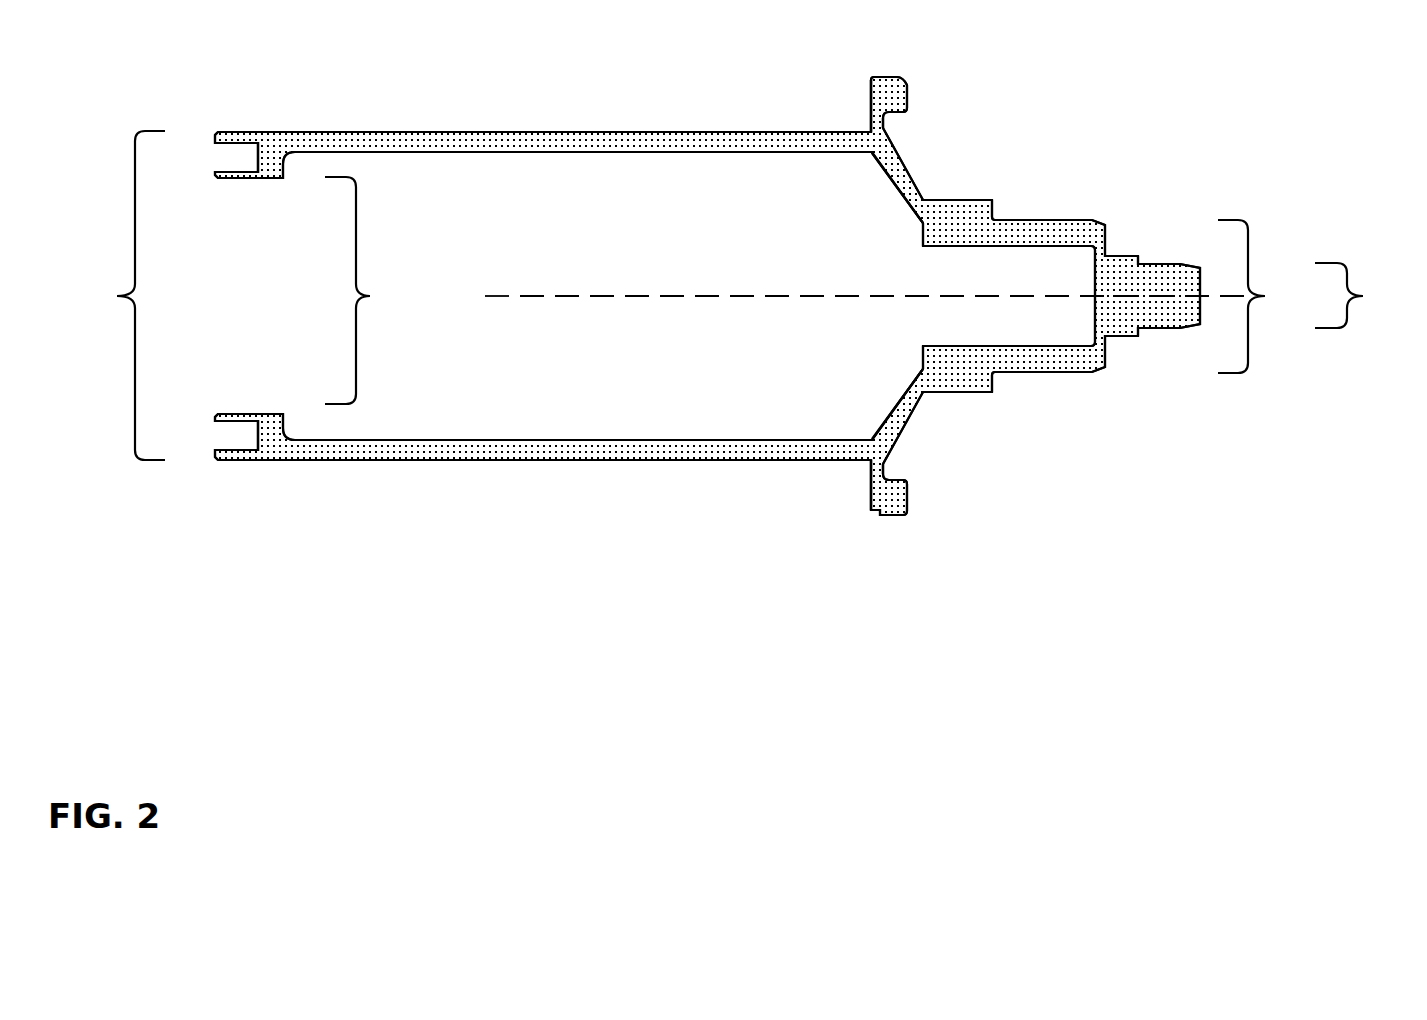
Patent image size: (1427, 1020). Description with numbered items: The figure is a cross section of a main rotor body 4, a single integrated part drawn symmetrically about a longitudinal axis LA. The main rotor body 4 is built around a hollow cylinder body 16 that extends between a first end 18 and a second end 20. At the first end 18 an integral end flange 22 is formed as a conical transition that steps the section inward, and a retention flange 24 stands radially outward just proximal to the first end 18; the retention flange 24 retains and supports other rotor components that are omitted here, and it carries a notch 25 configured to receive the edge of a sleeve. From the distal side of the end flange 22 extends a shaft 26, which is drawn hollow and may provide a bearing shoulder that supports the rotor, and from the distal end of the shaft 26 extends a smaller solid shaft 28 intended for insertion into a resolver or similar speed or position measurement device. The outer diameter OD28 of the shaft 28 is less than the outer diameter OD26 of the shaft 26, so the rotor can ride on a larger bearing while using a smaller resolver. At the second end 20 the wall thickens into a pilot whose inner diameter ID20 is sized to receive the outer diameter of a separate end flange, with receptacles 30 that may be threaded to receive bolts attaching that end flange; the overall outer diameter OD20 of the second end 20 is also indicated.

The main rotor body 4 is at (1102, 134).
The hollow cylinder body 16 is at (474, 96).
The first end 18 is at (835, 106).
The second end 20 is at (205, 108).
The integral end flange 22 is at (939, 147).
The retention flange 24 is at (898, 83).
The notch 25 is at (877, 80).
The shaft 26 is at (1001, 299).
The shaft 28 is at (1158, 271).
The receptacles 30 is at (246, 160).
The longitudinal axis LA is at (801, 296).
The outer diameter of proximal end OD20 is at (111, 295).
The inner diameter of second end ID20 is at (375, 290).
The outer diameter of shaft 26 OD26 is at (1274, 296).
The outer diameter of shaft 28 OD28 is at (1370, 295).